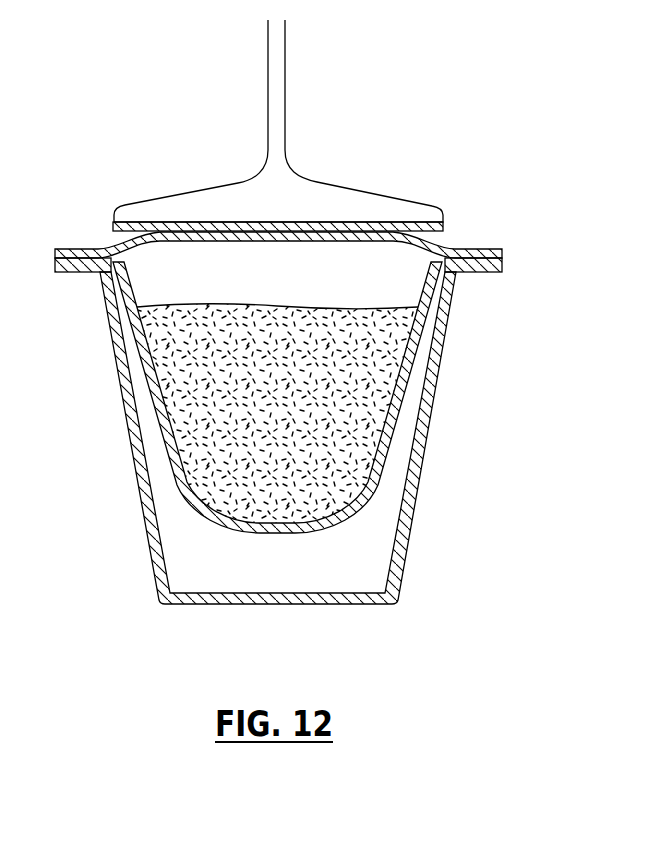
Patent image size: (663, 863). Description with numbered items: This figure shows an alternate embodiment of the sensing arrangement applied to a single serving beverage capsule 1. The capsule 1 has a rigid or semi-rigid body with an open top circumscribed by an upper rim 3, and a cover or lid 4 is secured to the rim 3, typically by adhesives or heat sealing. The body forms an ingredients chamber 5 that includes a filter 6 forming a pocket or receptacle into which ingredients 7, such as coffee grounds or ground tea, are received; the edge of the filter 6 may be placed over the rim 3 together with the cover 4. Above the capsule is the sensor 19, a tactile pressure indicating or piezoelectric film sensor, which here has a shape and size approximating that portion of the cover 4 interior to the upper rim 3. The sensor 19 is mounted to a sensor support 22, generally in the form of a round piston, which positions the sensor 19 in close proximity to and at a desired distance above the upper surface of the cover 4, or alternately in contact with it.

The beverage capsule 1 is at (420, 472).
The upper rim 3 is at (465, 275).
The cover 4 is at (443, 247).
The ingredients chamber 5 is at (288, 584).
The filter 6 is at (178, 487).
The beverage ingredient 7 is at (291, 413).
The pressure indicating sensor 19 is at (451, 226).
The sensor support 22 is at (317, 180).